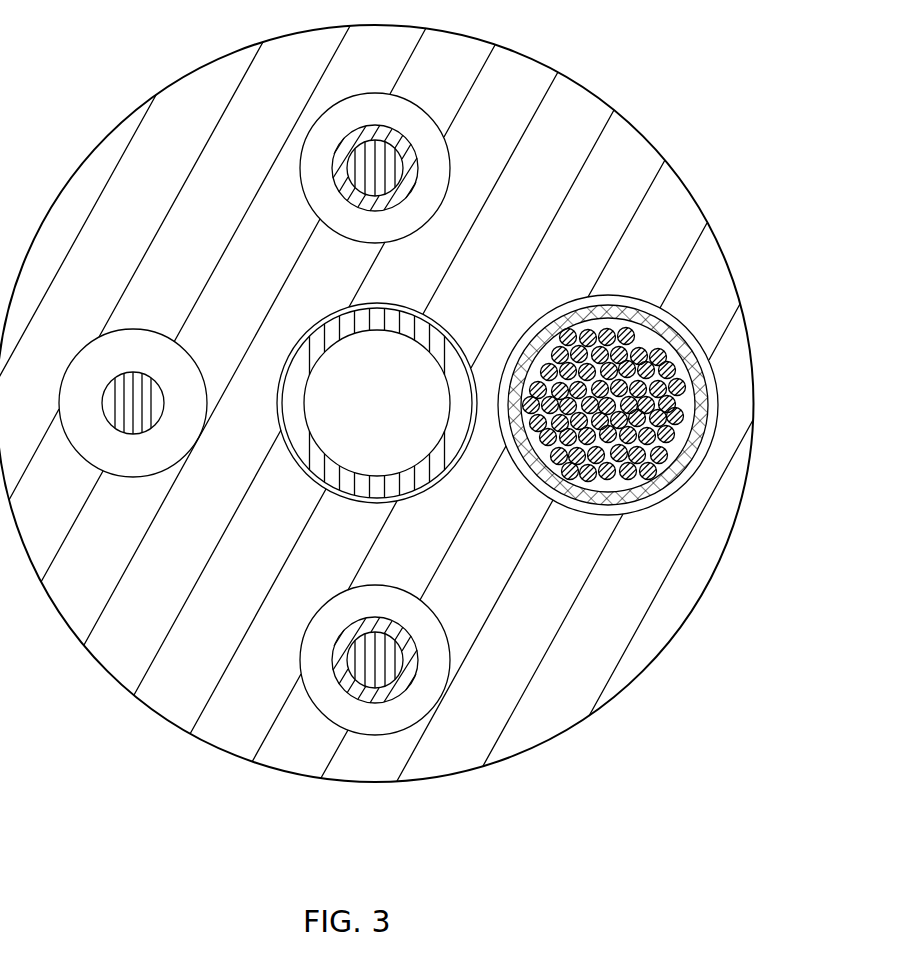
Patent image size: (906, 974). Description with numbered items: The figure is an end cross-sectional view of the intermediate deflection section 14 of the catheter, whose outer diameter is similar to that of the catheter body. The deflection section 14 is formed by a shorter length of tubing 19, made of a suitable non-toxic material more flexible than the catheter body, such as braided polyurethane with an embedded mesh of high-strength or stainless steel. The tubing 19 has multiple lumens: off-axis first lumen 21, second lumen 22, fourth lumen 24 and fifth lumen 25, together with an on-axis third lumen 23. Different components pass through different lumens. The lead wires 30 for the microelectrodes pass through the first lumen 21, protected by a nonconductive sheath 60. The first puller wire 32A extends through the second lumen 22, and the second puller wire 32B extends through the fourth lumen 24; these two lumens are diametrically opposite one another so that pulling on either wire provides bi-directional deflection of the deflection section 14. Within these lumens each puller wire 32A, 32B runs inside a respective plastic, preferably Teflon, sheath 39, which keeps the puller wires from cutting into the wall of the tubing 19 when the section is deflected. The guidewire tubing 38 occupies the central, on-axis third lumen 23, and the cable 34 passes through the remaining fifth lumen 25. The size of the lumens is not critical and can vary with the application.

The intermediate deflection section 14 is at (654, 791).
The tubing 19 is at (208, 548).
The first lumen 21 is at (582, 513).
The second lumen 22 is at (301, 158).
The third lumen 23 is at (455, 327).
The fourth lumen 24 is at (367, 737).
The fifth lumen 25 is at (153, 328).
The lead wires 30 is at (682, 395).
The first puller wire 32A is at (370, 182).
The second puller wire 32B is at (378, 642).
The cable 34 is at (137, 423).
The guidewire tubing 38 is at (313, 470).
The sheath 39 is at (418, 177).
The nonconductive sheath 60 is at (633, 298).